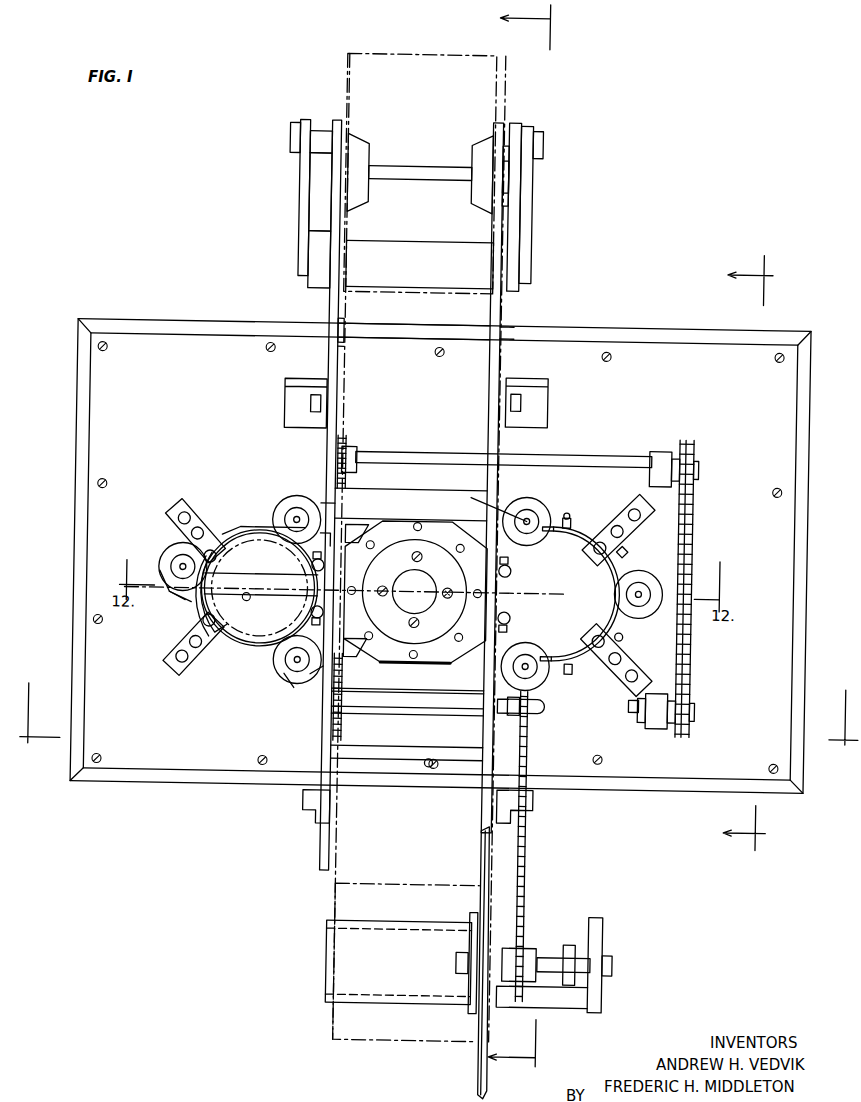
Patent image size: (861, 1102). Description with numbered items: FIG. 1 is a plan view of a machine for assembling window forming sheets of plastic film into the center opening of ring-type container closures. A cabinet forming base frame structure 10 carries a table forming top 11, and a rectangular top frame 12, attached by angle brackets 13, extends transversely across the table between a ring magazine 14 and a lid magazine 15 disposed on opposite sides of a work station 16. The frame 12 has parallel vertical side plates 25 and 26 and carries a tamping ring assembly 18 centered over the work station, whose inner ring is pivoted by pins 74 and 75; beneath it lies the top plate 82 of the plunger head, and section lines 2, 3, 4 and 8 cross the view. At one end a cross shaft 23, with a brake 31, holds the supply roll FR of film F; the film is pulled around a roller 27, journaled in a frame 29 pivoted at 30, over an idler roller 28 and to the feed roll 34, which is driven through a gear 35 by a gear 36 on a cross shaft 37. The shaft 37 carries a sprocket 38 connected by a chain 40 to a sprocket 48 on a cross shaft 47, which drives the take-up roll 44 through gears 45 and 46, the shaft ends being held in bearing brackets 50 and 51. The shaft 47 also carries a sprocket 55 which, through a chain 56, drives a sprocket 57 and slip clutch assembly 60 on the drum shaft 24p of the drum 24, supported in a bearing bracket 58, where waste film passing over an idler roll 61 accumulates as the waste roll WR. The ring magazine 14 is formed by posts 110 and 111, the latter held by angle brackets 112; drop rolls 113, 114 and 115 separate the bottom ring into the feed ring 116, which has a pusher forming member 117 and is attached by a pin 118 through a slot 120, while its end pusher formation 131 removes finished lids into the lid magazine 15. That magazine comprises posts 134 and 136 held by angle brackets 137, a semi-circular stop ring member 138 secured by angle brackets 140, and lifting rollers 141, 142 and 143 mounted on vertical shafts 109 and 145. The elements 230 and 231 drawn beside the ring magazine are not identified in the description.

The base frame structure 10 is at (651, 318).
The table forming top 11 is at (770, 340).
The rectangular top frame 12 is at (514, 323).
The frame side plate 26 is at (325, 310).
The angle brackets 13 is at (282, 406).
The ring magazine 14 is at (246, 514).
The lid magazine 15 is at (584, 512).
The work station 16 is at (469, 437).
The tamping ring assembly 18 is at (458, 526).
The cross shaft 23 is at (410, 168).
The drum 24 is at (332, 940).
The drum shaft 24p is at (546, 968).
The frame side plate 25 is at (503, 350).
The roller 27 is at (406, 248).
The idler roller 28 is at (400, 340).
The frame 29 is at (526, 210).
The pivot mounting 30 is at (508, 150).
The brake 31 is at (503, 180).
The feed roll 34 is at (420, 506).
The gear 35 is at (328, 505).
The gear 36 is at (336, 462).
The cross shaft 37 is at (434, 456).
The sprocket 38 is at (678, 444).
The chain 40 is at (694, 520).
The take-up roll 44 is at (384, 688).
The gear 45 is at (322, 686).
The driving gear 46 is at (336, 716).
The cross shaft 47 is at (632, 712).
The sprocket 48 is at (660, 726).
The bearing bracket 50 is at (656, 458).
The bearing bracket 51 is at (646, 720).
The sprocket 55 is at (530, 712).
The chain 56 is at (531, 850).
The sprocket 57 is at (530, 950).
The bearing bracket 58 is at (610, 928).
The slip clutch assembly 60 is at (576, 940).
The idler roll 61 is at (404, 760).
The pins 74 is at (440, 605).
The pins 75 is at (440, 558).
The top plate 82 is at (460, 645).
The central hub axis 8 is at (265, 580).
The vertical shafts 109 is at (552, 712).
The cage forming vertical posts 110 is at (312, 568).
The cage forming vertical posts 111 is at (235, 620).
The angle brackets 112 is at (190, 520).
The spirally grooved feed roll 113 is at (166, 552).
The spirally grooved feed roll 114 is at (276, 666).
The spirally grooved feed roll 115 is at (286, 502).
The feed ring 116 is at (252, 538).
The pusher forming member 117 is at (206, 624).
The pin 118 is at (184, 606).
The slot 120 is at (253, 606).
The end pusher formation 131 is at (360, 525).
The post members 134 is at (510, 566).
The post members 136 is at (602, 550).
The angle brackets 137 is at (628, 510).
The semi-circular stop ring member 138 is at (566, 512).
The angle brackets 140 is at (640, 550).
The spirally grooved lifting roller 141 is at (536, 678).
The spirally grooved lifting roller 142 is at (616, 596).
The spirally grooved lifting roller 143 is at (538, 506).
The vertical shaft 145 is at (635, 635).
The left end pulley 230 is at (170, 560).
The pulley arm 231 is at (286, 680).
The section line 2 is at (439, 733).
The section line 3 is at (754, 556).
The section line 4 is at (529, 540).
The film F is at (330, 354).
The supply roll FR is at (356, 58).
The waste roll WR is at (352, 1036).